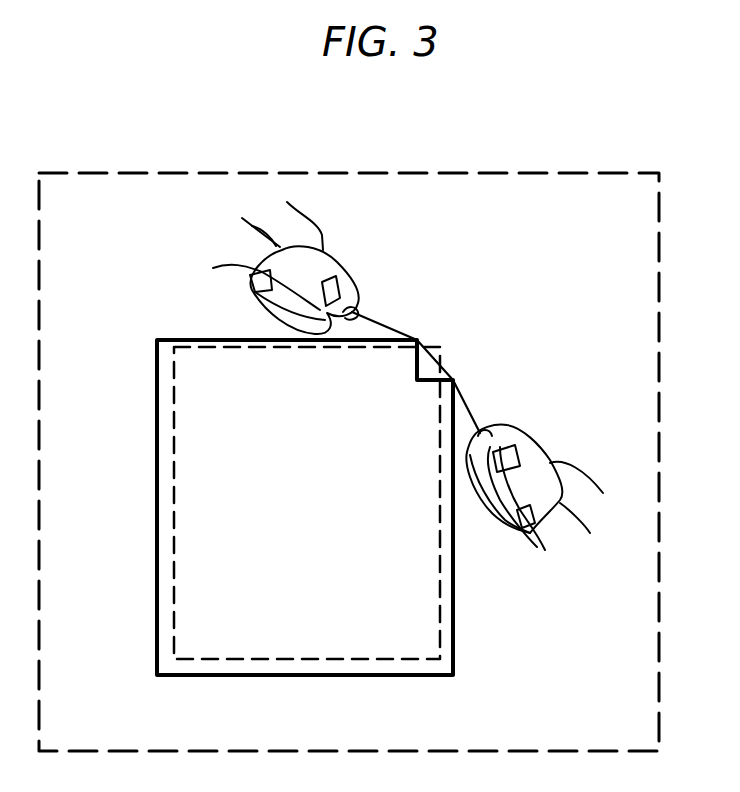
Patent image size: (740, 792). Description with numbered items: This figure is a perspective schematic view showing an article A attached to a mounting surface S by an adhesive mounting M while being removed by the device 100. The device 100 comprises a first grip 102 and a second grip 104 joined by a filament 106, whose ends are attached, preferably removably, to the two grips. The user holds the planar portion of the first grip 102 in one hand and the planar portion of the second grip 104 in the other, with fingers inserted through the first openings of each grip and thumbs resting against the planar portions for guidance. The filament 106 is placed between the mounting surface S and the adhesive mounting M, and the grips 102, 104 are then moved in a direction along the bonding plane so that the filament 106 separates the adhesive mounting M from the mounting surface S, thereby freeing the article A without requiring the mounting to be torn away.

The device for removing an article from a mounting surface 100 is at (388, 277).
The first grip 102 is at (338, 247).
The second grip 104 is at (524, 428).
The filament 106 is at (382, 326).
The mounting surface S is at (632, 299).
The adhesive mounting M is at (438, 603).
The article A is at (310, 498).